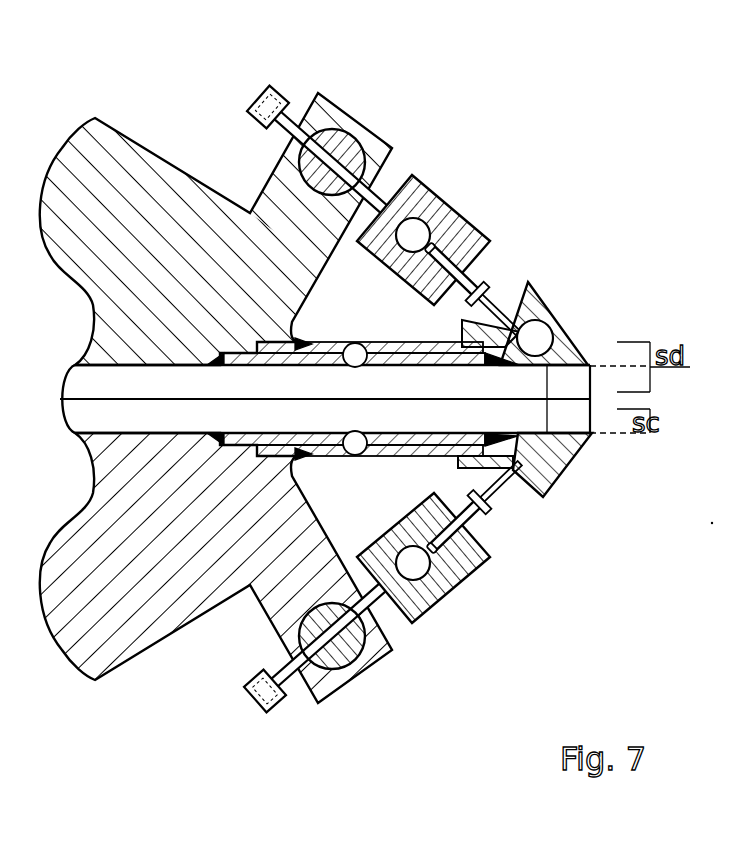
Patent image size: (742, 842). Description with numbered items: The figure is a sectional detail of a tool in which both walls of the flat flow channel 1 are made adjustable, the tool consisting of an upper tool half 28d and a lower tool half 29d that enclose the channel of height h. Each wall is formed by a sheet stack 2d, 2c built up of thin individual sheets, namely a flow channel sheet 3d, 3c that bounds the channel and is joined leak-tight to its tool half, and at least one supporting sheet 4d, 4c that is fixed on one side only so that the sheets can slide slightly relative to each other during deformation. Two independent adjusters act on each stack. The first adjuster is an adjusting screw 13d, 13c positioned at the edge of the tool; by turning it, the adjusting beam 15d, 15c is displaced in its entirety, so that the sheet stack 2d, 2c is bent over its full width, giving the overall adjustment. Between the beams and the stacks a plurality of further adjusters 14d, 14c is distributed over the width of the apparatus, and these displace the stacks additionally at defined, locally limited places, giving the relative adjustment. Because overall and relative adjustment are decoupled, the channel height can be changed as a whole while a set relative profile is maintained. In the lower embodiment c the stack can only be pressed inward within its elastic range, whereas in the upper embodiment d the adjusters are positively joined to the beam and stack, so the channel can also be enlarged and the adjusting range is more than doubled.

The flow channel 1 is at (165, 385).
The sheet stack 2d is at (358, 345).
The sheet stack 2c is at (357, 453).
The flow channel sheet 3d is at (395, 343).
The flow channel sheet 3c is at (394, 453).
The supporting sheet 4d is at (480, 290).
The supporting sheet 4c is at (488, 556).
The adjuster 13d is at (274, 84).
The adjuster 13c is at (280, 706).
The adjuster 14d is at (530, 283).
The adjuster 14c is at (493, 505).
The adjusting beam 15d is at (415, 193).
The adjusting beam 15c is at (398, 603).
The upper tool half 28d is at (70, 173).
The lower tool half 29d is at (153, 603).